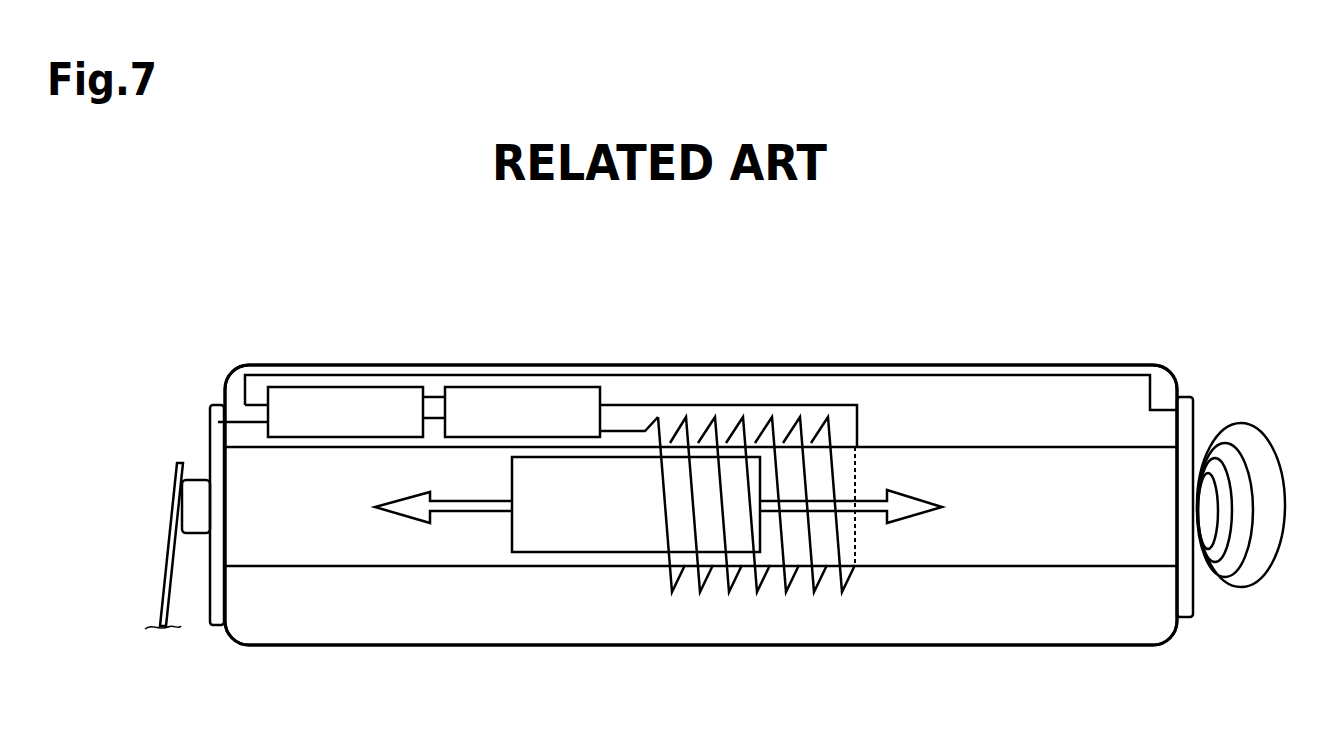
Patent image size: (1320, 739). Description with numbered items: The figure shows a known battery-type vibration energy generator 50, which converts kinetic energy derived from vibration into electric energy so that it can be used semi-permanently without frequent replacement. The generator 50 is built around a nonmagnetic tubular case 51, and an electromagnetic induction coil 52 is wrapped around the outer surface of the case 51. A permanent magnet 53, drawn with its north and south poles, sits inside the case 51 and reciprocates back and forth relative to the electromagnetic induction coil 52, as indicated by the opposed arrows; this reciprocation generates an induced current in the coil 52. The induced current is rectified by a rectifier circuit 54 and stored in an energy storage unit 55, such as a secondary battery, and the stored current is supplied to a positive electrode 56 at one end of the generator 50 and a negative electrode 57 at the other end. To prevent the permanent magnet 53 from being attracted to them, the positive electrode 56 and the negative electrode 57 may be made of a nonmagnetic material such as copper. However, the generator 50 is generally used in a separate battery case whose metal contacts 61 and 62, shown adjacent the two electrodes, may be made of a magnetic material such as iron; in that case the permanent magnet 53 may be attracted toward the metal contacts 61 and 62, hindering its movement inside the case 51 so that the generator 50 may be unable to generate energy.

The battery-type vibration energy generator 50 is at (673, 290).
The nonmagnetic tubular case 51 is at (528, 567).
The electromagnetic induction coil 52 is at (665, 577).
The permanent magnet 53 is at (590, 540).
The rectifier circuit 54 is at (513, 398).
The energy storage unit 55 is at (342, 398).
The positive electrode 56 is at (195, 488).
The negative electrode 57 is at (1185, 425).
The metal contact 61 is at (170, 542).
The metal contact 62 is at (1263, 582).